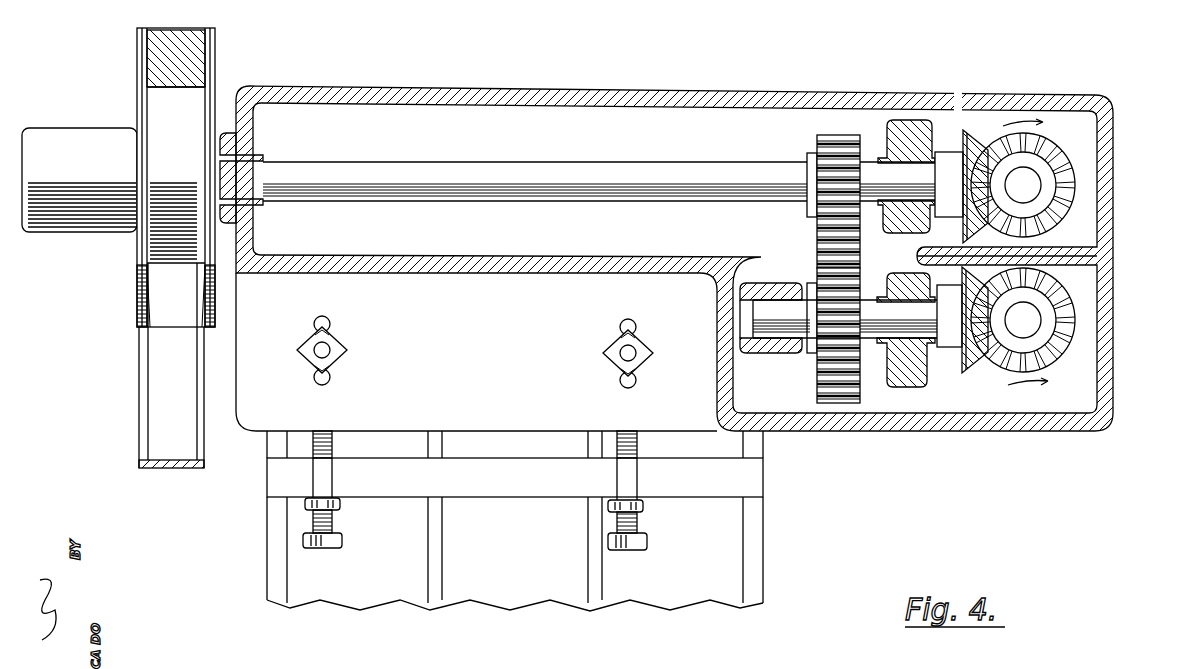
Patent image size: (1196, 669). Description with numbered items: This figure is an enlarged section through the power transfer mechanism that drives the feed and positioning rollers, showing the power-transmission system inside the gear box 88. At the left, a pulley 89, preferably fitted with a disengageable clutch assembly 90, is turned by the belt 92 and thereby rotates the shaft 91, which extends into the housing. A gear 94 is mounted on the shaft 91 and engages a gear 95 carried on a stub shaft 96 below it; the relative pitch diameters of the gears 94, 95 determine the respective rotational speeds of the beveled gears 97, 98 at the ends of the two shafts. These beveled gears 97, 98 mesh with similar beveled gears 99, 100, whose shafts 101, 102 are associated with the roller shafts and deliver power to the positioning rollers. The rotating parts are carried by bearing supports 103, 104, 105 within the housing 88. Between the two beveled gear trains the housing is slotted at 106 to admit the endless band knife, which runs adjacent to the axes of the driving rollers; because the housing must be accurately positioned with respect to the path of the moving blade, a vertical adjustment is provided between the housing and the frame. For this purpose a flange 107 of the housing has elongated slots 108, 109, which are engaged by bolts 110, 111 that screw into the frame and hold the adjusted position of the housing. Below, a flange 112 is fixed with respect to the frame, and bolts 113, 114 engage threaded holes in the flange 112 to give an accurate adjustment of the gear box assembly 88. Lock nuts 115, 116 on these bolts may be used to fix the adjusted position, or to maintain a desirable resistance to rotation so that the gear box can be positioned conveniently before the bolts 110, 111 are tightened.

The gear box 88 is at (832, 92).
The pulley 89 is at (216, 62).
The disengageable clutch assembly 90 is at (115, 130).
The shaft 91 is at (472, 160).
The belt 92 is at (140, 405).
The gear 94 is at (817, 142).
The gear 95 is at (817, 262).
The stub shaft 96 is at (773, 327).
The beveled gear 97 is at (978, 145).
The beveled gear 98 is at (975, 366).
The beveled gear 99 is at (1052, 150).
The beveled gear 100 is at (1052, 360).
The shaft 101 is at (1032, 181).
The shaft 102 is at (1027, 328).
The bearing support 103 is at (908, 120).
The bearing support 104 is at (797, 354).
The bearing support 105 is at (910, 388).
The slot 106 is at (1113, 255).
The flange 107 is at (476, 352).
The elongated slot 108 is at (334, 330).
The elongated slot 109 is at (616, 331).
The bolt 110 is at (338, 358).
The bolt 111 is at (613, 362).
The flange 112 is at (518, 492).
The bolt 113 is at (330, 550).
The bolt 114 is at (633, 550).
The lock nut 115 is at (340, 505).
The lock nut 116 is at (643, 505).